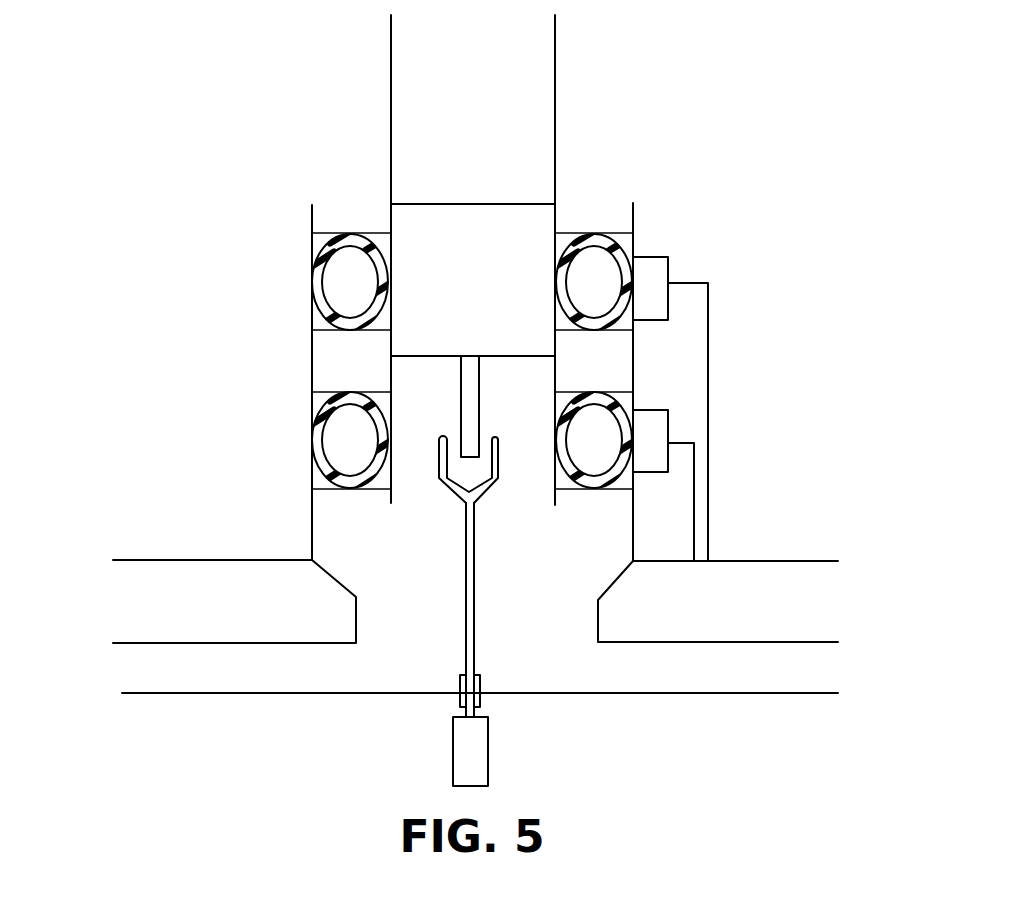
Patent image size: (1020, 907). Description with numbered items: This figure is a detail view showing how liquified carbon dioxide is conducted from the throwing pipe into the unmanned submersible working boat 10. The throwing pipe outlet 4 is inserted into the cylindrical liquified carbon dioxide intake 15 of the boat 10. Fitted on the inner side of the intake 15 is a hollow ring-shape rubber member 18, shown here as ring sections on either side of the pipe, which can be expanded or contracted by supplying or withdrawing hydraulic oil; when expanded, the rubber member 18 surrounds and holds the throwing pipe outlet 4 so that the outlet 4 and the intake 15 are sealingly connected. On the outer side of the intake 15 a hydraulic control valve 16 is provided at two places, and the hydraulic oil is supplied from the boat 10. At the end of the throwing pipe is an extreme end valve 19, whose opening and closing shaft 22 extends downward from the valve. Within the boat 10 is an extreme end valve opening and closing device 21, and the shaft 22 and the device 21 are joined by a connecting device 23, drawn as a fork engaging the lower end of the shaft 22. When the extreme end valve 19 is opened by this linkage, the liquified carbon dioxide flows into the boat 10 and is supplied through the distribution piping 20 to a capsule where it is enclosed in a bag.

The throwing pipe outlet 4 is at (556, 117).
The unmanned submersible working boat 10 is at (255, 584).
The liquified CO2 intake 15 is at (633, 203).
The hydraulic control valve 16 is at (660, 275).
The hollow ring-shape rubber member 18 is at (343, 233).
The extreme end valve 19 is at (477, 237).
The distribution piping 20 is at (308, 672).
The extreme end valve opening and closing device 21 is at (475, 633).
The opening and closing shaft 22 is at (461, 399).
The connecting device 23 is at (485, 489).